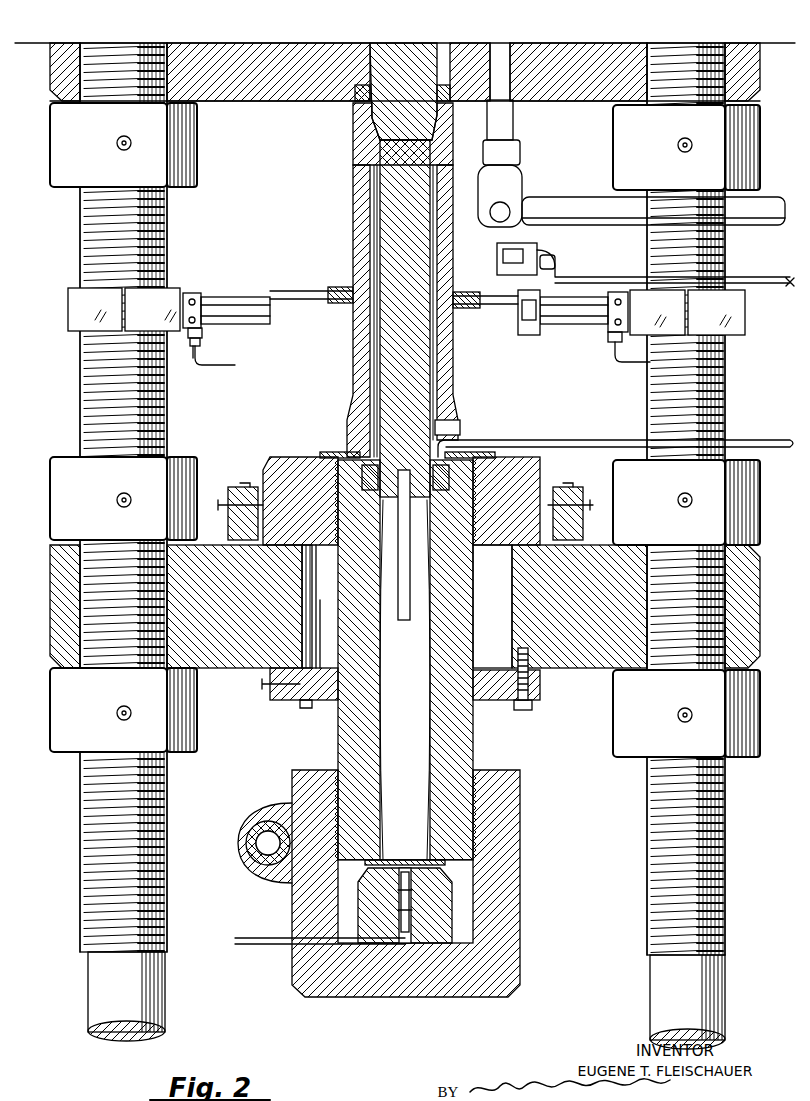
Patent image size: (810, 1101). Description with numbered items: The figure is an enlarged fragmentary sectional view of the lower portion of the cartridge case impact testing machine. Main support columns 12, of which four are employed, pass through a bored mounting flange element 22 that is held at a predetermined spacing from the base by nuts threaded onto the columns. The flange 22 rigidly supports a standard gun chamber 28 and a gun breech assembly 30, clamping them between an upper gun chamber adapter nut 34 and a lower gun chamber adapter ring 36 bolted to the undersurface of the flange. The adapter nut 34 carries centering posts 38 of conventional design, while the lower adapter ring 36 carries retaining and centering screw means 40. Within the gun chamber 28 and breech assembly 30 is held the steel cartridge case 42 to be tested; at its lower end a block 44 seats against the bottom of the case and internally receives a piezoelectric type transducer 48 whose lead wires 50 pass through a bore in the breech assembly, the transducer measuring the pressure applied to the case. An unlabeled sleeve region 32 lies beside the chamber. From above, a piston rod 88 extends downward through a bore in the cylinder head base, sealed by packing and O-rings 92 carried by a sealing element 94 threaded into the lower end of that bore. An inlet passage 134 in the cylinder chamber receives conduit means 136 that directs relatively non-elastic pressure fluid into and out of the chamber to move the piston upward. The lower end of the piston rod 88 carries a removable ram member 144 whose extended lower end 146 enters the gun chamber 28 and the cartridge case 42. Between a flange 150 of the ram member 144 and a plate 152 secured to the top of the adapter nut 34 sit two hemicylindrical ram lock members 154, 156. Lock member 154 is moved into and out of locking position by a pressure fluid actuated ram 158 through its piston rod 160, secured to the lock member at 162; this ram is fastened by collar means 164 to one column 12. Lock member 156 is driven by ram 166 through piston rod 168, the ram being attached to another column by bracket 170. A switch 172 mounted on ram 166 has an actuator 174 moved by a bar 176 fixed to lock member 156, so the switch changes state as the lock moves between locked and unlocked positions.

The main support column 12 is at (82, 430).
The mounting flange 22 is at (752, 641).
The gun chamber 28 is at (338, 738).
The gun breech assembly 30 is at (522, 900).
The spacer sleeve 32 is at (480, 645).
The upper gun chamber adapter nut 34 is at (525, 457).
The lower gun chamber adapter ring 36 is at (529, 700).
The centering posts 38 is at (242, 487).
The retaining and centering screw means 40 is at (266, 688).
The steel cartridge case 42 is at (430, 710).
The block 44 is at (450, 930).
The piezoelectric type transducer 48 is at (400, 905).
The lead wires 50 is at (262, 945).
The piston rod 88 is at (410, 62).
The packing and O-rings 92 is at (360, 101).
The sealing element 94 is at (445, 85).
The inlet passage 134 is at (505, 62).
The conduit means 136 is at (572, 210).
The ram member 144 is at (396, 263).
The extended lower end 146 is at (396, 472).
The flange 150 is at (362, 165).
The plate 152 is at (330, 457).
The hemicylindrical ram lock member 154 is at (372, 276).
The hemicylindrical ram lock member 156 is at (455, 360).
The pressure fluid actuated ram 158 is at (222, 300).
The piston rod 160 is at (315, 315).
The securing point 162 is at (348, 296).
The collar means 164 is at (90, 300).
The ram 166 is at (560, 322).
The piston rod 168 is at (488, 312).
The bracket 170 is at (730, 320).
The switch 172 is at (553, 263).
The actuator 174 is at (500, 280).
The bar 176 is at (514, 338).